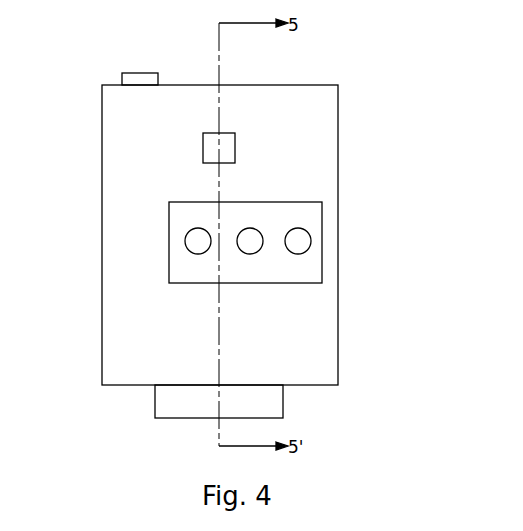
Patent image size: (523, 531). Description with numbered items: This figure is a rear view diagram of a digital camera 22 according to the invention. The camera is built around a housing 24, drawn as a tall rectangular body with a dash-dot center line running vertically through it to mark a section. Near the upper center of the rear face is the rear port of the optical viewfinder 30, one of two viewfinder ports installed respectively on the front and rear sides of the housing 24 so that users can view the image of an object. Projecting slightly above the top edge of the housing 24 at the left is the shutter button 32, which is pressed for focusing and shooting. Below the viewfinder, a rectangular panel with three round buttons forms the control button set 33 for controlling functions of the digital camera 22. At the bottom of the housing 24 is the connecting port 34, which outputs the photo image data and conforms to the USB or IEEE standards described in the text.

The digital camera 22 is at (387, 60).
The housing 24 is at (340, 111).
The optical viewfinder 30 is at (235, 148).
The shutter button 32 is at (122, 73).
The control button set 33 is at (322, 242).
The connecting port 34 is at (283, 407).